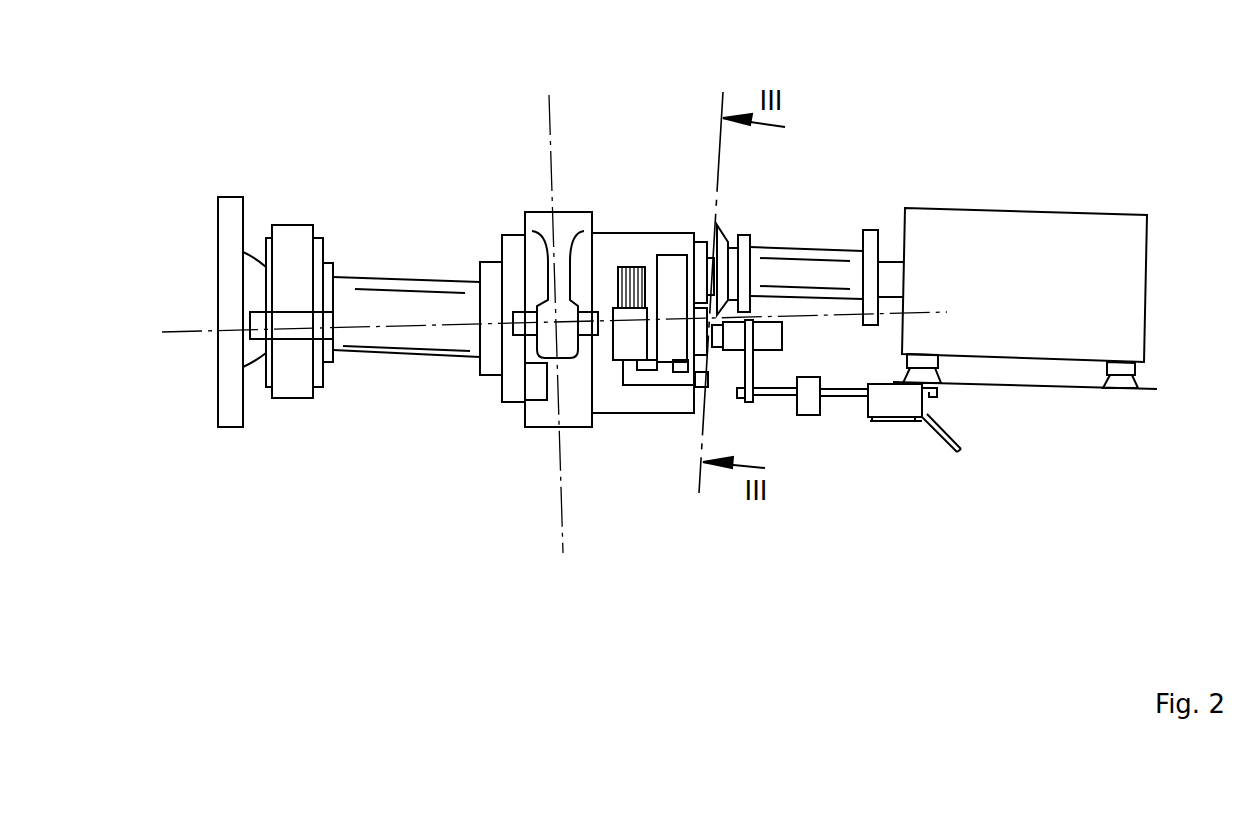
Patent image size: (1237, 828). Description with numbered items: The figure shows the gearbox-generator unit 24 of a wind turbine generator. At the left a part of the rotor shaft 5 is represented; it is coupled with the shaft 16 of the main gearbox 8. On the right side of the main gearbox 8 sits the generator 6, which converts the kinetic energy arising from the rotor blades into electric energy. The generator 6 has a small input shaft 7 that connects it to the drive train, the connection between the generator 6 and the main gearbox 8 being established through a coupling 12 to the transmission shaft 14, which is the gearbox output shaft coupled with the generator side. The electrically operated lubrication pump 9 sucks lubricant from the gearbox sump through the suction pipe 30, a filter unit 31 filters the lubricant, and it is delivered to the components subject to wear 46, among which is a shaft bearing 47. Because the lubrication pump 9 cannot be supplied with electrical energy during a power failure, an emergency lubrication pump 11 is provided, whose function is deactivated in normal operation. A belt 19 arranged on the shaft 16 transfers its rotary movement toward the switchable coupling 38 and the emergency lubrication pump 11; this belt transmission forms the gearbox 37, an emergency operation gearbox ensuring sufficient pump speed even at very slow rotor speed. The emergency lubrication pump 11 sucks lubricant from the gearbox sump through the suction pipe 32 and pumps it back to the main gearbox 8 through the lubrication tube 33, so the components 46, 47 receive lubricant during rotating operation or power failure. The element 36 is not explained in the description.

The rotor shaft 5 is at (363, 335).
The generator 6 is at (1090, 237).
The input shaft 7 is at (890, 280).
The main gearbox 8 is at (603, 381).
The lubrication pump 9 is at (628, 265).
The emergency lubrication pump 11 is at (897, 413).
The coupling 12 is at (815, 221).
The transmission shaft 14 is at (705, 270).
The shaft 16 is at (697, 390).
The belt 19 is at (752, 366).
The gearbox-generator unit 24 is at (1034, 95).
The suction pipe 30 is at (685, 378).
The filter unit 31 is at (665, 262).
The suction pipe 32 is at (950, 435).
The lubrication tube 33 is at (937, 390).
The cone 36 is at (727, 228).
The gearbox 37 is at (764, 421).
The switchable coupling 38 is at (808, 407).
The components subject to wear 46 is at (535, 392).
The shaft bearing 47 is at (487, 367).